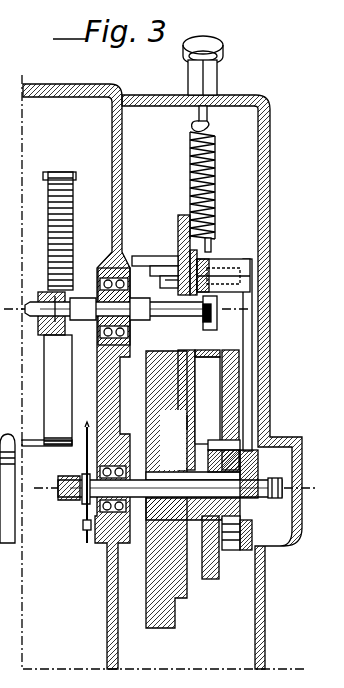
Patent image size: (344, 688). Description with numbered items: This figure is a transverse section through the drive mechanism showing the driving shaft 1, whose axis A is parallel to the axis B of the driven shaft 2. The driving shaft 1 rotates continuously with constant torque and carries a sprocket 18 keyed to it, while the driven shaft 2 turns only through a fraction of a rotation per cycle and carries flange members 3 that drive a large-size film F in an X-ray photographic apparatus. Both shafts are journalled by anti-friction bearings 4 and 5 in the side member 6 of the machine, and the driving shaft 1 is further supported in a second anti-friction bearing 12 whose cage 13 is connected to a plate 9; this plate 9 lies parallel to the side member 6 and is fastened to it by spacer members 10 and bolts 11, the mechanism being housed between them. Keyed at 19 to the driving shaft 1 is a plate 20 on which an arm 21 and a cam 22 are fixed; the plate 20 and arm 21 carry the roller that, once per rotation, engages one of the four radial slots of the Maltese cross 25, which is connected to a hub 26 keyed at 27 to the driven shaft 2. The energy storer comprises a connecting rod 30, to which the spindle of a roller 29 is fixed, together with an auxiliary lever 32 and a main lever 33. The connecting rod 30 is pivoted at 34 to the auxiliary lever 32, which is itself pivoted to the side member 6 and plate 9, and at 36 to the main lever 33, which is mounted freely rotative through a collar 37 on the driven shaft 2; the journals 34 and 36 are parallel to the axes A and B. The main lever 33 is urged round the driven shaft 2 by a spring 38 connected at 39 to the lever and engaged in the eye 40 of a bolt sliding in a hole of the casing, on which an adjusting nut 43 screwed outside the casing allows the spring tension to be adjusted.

The driving shaft 1 is at (72, 497).
The driven shaft 2 is at (44, 302).
The flange members 3 is at (58, 255).
The anti-friction bearing 4 is at (193, 489).
The anti-friction bearing 5 is at (98, 290).
The side member 6 is at (123, 205).
The plate 9 is at (252, 410).
The spacer members 10 is at (140, 257).
The screws or bolts 11 is at (252, 270).
The second anti-friction bearing 12 is at (262, 478).
The cage 13 is at (271, 440).
The sprocket 18 is at (84, 540).
The key 19 is at (184, 470).
The plate 20 is at (178, 600).
The arm 21 is at (175, 422).
The cam 22 is at (187, 448).
The Maltese cross 25 is at (178, 258).
The hub 26 is at (172, 272).
The key 27 is at (162, 284).
The roller 29 is at (216, 438).
The connecting rod 30 is at (226, 416).
The auxiliary lever 32 is at (226, 549).
The main lever 33 is at (208, 270).
The pivot 34 is at (248, 546).
The pivot 36 is at (207, 397).
The collar 37 is at (217, 320).
The spring 38 is at (190, 186).
The spring connection 39 is at (211, 245).
The eye 40 is at (192, 126).
The adjusting nut 43 is at (188, 80).
The axis A is at (173, 479).
The axis B is at (20, 311).
The film F is at (34, 170).